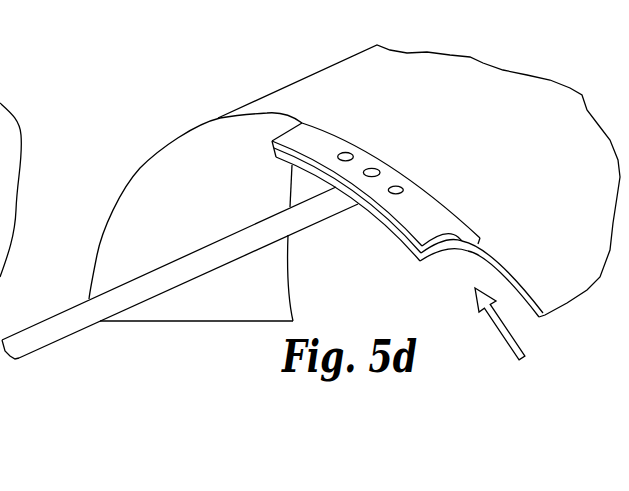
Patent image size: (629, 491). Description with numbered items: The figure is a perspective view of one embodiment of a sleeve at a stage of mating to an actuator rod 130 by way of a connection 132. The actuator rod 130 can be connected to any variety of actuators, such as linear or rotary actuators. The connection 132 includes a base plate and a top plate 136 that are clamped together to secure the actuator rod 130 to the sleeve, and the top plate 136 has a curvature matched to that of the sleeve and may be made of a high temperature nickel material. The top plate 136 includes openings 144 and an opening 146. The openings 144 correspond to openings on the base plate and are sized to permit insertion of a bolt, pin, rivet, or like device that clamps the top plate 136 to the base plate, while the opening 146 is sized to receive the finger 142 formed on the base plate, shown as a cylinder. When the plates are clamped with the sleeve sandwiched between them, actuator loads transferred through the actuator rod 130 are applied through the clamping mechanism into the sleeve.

The actuator rod 130 is at (166, 272).
The connection 132 is at (505, 336).
The top plate 136 is at (407, 199).
The finger 142 is at (378, 160).
The openings 144 is at (343, 153).
The opening 146 is at (371, 169).